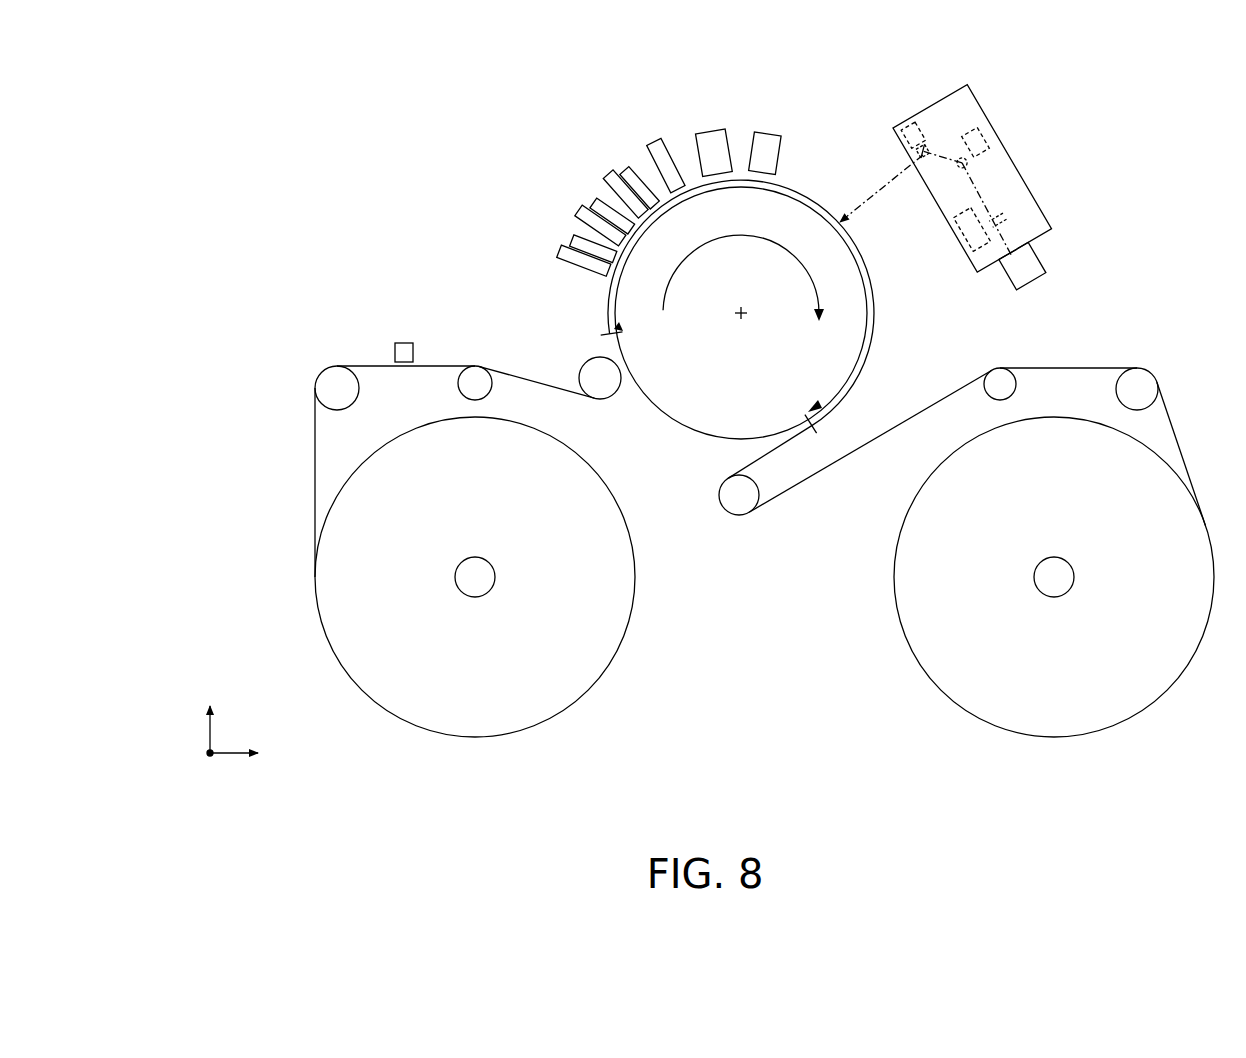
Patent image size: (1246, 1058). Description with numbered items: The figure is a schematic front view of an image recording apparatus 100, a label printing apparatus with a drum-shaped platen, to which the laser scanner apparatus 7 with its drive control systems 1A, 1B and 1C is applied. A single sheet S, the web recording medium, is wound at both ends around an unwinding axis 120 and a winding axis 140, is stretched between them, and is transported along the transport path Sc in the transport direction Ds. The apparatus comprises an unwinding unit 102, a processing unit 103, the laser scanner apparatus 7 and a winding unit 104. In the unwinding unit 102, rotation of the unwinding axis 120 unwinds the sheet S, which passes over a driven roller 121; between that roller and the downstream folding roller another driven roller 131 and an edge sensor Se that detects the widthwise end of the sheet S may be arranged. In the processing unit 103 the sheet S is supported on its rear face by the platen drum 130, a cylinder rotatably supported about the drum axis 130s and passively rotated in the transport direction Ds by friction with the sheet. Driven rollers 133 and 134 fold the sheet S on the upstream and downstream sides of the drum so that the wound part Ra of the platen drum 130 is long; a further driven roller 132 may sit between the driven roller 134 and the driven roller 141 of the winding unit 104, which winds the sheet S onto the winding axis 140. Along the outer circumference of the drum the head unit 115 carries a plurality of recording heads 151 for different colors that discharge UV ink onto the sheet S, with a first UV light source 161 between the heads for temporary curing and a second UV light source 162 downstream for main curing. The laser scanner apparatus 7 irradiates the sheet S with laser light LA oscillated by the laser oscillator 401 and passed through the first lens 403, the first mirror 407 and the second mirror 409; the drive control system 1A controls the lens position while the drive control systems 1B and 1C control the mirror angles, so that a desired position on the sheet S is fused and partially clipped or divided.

The image recording apparatus 100 is at (668, 742).
The unwinding unit 102 is at (272, 451).
The processing unit 103 is at (493, 148).
The winding unit 104 is at (1108, 327).
The head unit 115 is at (595, 112).
The unwinding axis 120 is at (476, 588).
The driven roller 121 is at (350, 384).
The platen drum 130 is at (680, 413).
The drum axis 130s is at (737, 318).
The driven roller 131 is at (478, 378).
The driven roller 132 is at (1006, 380).
The driven roller 133 is at (593, 373).
The driven roller 134 is at (740, 509).
The winding axis 140 is at (1052, 588).
The driven roller 141 is at (1150, 383).
The recording head 151 is at (660, 142).
The first UV light source 161 is at (626, 172).
The second UV light source 162 is at (765, 150).
The laser scanner apparatus 7 is at (1040, 175).
The laser oscillator 401 is at (1022, 265).
The first lens 403 is at (997, 220).
The first mirror 407 is at (962, 163).
The second mirror 409 is at (923, 151).
The drive control system 1A is at (972, 230).
The drive control system 1B is at (976, 142).
The drive control system 1C is at (913, 135).
The laser light LA is at (858, 207).
The part of the platen drum where the sheet is wound Ra is at (737, 306).
The transport direction Ds is at (743, 278).
The sheet S is at (915, 388).
The transport path Sc is at (828, 510).
The edge sensor Se is at (406, 343).